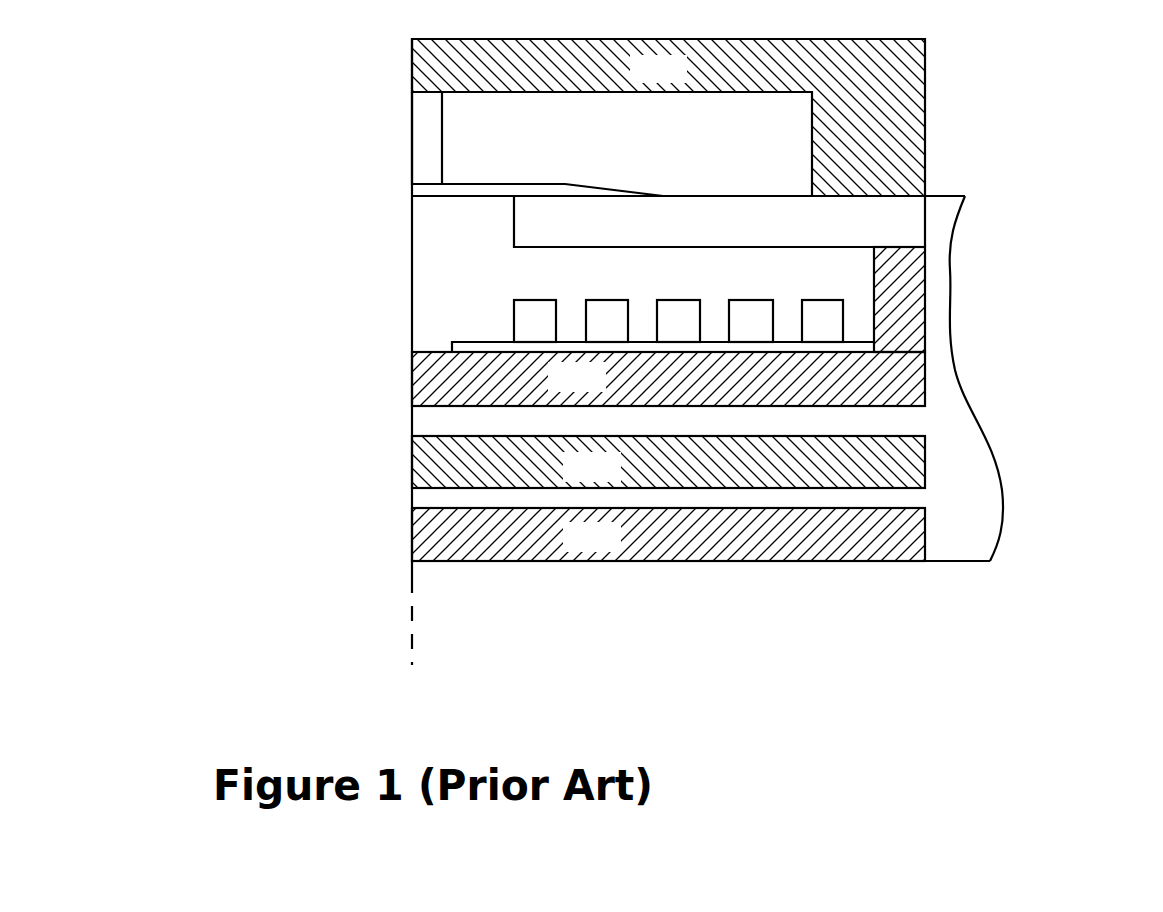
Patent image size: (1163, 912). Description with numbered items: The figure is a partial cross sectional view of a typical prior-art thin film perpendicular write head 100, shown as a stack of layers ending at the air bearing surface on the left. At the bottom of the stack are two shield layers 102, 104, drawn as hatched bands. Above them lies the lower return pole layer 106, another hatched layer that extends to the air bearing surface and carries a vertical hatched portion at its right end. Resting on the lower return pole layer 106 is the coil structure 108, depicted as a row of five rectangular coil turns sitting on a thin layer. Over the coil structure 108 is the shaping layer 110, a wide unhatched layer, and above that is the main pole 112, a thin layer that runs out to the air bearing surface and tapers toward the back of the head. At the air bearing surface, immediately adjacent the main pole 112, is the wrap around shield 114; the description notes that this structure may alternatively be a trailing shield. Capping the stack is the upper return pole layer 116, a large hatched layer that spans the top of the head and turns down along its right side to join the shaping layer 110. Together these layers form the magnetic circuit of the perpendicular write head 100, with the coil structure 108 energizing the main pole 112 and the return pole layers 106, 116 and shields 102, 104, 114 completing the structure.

The thin film perpendicular write head 100 is at (976, 112).
The shield layer 102 is at (617, 547).
The shield layer 104 is at (617, 478).
The lower return pole layer 106 is at (602, 388).
The coil structure 108 is at (513, 320).
The shaping layer 110 is at (786, 232).
The main pole 112 is at (565, 184).
The wrap around shield 114 is at (428, 138).
The upper return pole layer 116 is at (683, 80).